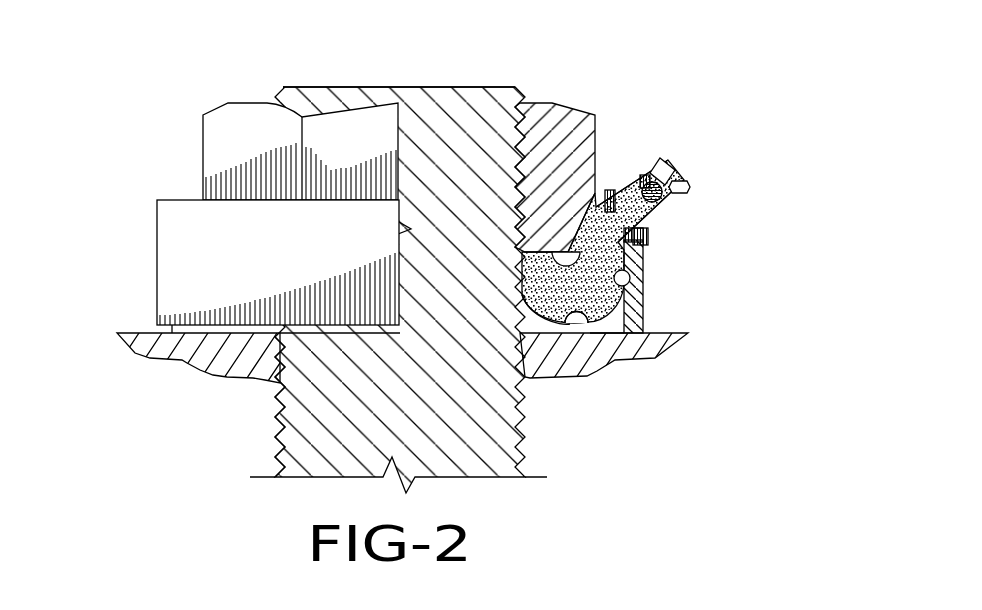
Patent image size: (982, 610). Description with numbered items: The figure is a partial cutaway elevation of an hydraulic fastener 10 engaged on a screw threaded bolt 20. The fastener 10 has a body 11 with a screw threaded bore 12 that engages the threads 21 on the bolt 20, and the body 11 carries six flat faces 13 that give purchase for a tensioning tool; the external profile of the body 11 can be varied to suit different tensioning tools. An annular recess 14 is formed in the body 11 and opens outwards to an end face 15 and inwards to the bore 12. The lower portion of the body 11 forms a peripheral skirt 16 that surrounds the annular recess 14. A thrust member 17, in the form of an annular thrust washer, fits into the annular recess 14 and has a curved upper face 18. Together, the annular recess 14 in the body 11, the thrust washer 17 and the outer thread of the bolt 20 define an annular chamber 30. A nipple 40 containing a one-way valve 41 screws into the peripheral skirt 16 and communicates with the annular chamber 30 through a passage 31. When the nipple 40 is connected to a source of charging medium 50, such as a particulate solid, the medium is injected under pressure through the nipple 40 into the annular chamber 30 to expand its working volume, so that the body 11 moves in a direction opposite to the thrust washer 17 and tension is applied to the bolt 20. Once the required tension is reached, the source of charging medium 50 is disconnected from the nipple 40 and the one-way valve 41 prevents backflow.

The hydraulic fastener 10 is at (562, 104).
The body 11 is at (237, 125).
The screw threaded bore 12 is at (513, 132).
The flat faces 13 is at (240, 152).
The annular recess 14 is at (572, 267).
The end face 15 is at (645, 337).
The peripheral skirt 16 is at (200, 245).
The thrust member 17 is at (608, 330).
The curved upper face 18 is at (630, 272).
The screw threaded bolt 20 is at (350, 410).
The threads 21 is at (275, 402).
The annular chamber 30 is at (591, 322).
The passage 31 is at (623, 243).
The nipple 40 is at (667, 165).
The one-way valve 41 is at (682, 182).
The charging medium 50 is at (558, 292).